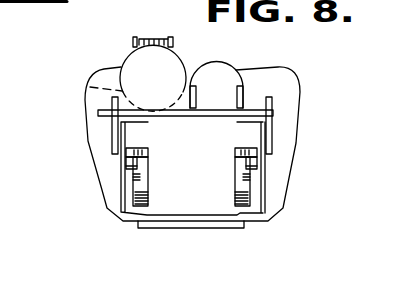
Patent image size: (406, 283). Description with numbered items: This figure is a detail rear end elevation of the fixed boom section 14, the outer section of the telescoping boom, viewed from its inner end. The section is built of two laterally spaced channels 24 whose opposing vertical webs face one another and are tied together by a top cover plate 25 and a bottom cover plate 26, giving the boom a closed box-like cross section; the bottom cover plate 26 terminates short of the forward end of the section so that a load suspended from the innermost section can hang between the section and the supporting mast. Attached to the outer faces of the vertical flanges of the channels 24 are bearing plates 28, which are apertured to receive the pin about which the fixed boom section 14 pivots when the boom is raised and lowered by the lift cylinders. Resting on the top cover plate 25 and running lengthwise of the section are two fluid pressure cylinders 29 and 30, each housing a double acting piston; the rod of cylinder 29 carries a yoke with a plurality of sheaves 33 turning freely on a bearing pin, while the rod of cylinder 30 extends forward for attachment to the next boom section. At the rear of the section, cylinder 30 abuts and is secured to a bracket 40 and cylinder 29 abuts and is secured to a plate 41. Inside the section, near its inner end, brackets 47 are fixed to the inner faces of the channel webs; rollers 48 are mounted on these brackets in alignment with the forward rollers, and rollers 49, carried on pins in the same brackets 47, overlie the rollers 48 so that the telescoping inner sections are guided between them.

The fixed boom section 14 is at (314, 91).
The channels 24 is at (120, 195).
The top cover plate 25 is at (218, 114).
The bottom cover plate 26 is at (182, 221).
The bearing plates 28 is at (113, 124).
The fluid pressure cylinder 29 is at (88, 87).
The fluid pressure cylinder 30 is at (222, 67).
The sheaves 33 is at (173, 43).
The bracket 40 is at (242, 88).
The plate 41 is at (131, 62).
The brackets 47 is at (130, 174).
The rollers 48 is at (148, 184).
The rollers 49 is at (148, 153).